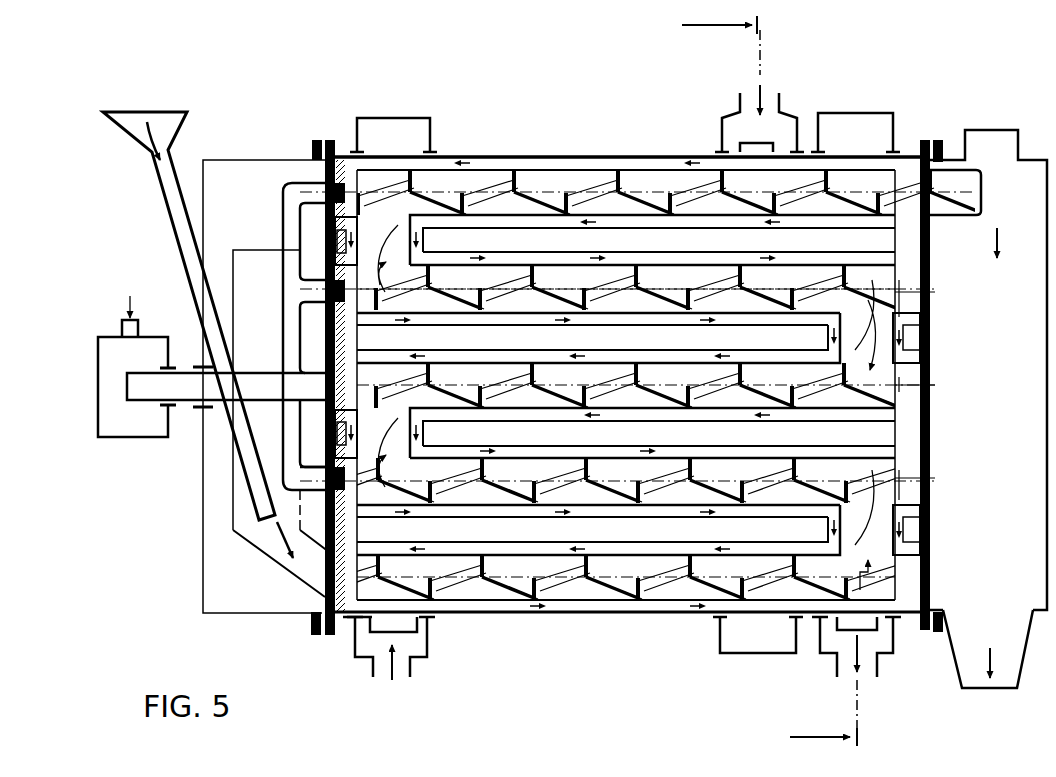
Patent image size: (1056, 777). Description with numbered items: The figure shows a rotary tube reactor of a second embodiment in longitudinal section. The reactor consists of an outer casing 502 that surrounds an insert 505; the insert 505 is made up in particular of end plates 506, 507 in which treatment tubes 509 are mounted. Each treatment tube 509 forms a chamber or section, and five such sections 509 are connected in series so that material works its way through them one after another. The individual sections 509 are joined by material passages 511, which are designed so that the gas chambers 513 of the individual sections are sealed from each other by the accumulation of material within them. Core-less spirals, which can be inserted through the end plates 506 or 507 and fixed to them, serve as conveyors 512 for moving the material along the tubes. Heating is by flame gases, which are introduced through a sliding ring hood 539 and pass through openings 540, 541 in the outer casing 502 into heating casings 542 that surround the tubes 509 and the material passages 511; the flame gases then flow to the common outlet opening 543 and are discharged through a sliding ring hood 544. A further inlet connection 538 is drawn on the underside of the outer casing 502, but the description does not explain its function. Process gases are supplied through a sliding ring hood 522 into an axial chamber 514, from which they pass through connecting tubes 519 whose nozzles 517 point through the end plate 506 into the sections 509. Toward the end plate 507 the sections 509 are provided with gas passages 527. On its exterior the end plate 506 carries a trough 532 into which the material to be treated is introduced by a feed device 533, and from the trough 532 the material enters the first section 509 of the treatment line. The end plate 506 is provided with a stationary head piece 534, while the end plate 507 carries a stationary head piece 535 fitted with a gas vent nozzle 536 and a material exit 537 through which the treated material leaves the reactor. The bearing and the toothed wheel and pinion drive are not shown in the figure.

The outer casing 502 is at (540, 152).
The insert 505 is at (586, 165).
The end plate 506 is at (327, 140).
The end plate 507 is at (927, 140).
The treatment tube 509 is at (493, 275).
The material passage 511 is at (398, 212).
The conveyor 512 is at (477, 573).
The gas chamber 513 is at (572, 197).
The axial chamber 514 is at (188, 392).
The nozzle 517 is at (312, 188).
The connecting tube 519 is at (293, 470).
The sliding ring hood 522 is at (118, 425).
The gas passage 527 is at (893, 292).
The trough 532 is at (255, 543).
The feed device 533 is at (180, 225).
The stationary head piece 534 is at (240, 605).
The stationary head piece 535 is at (1032, 383).
The gas vent nozzle 536 is at (997, 143).
The material exit 537 is at (1003, 667).
The bottom gas inlet 538 is at (427, 647).
The sliding ring hood 539 is at (733, 117).
The opening 540 is at (372, 630).
The opening 541 is at (737, 150).
The heating casing 542 is at (555, 515).
The common outlet opening 543 is at (845, 625).
The sliding ring hood 544 is at (883, 660).